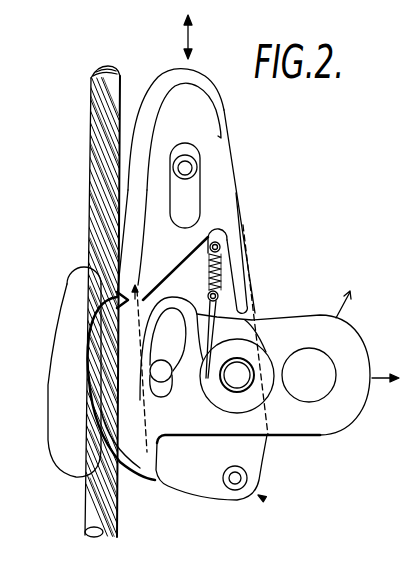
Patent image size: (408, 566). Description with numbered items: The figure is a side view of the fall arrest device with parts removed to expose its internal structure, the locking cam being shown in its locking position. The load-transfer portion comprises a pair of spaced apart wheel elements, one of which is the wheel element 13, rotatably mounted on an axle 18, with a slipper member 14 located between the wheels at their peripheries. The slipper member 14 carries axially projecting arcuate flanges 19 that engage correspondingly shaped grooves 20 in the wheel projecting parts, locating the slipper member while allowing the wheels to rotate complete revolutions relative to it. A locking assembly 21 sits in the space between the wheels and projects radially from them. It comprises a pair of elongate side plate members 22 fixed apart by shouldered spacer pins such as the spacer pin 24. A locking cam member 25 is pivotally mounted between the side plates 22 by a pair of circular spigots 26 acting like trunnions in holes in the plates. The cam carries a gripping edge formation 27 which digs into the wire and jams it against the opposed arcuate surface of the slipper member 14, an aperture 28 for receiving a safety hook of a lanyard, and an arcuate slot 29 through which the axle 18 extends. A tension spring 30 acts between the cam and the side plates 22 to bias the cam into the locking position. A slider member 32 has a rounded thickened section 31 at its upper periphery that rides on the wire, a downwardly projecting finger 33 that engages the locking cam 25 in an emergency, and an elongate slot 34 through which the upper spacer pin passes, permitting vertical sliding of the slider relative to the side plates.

The wheel element 13 is at (137, 284).
The slipper member 14 is at (67, 402).
The axle 18 is at (152, 375).
The arcuate flange 19 is at (90, 407).
The groove 20 is at (115, 301).
The locking assembly 21 is at (262, 497).
The side plate member 22 is at (252, 458).
The shouldered spacer pin 24 is at (61, 289).
The locking cam member 25 is at (207, 425).
The circular spigot 26 is at (243, 387).
The gripping edge formation 27 is at (145, 470).
The aperture 28 is at (311, 406).
The arcuate slot 29 is at (165, 397).
The tension spring 30 is at (219, 272).
The rounded thickened section 31 is at (164, 80).
The slider member 32 is at (224, 175).
The downwardly projecting finger 33 is at (252, 300).
The elongate slot 34 is at (199, 215).